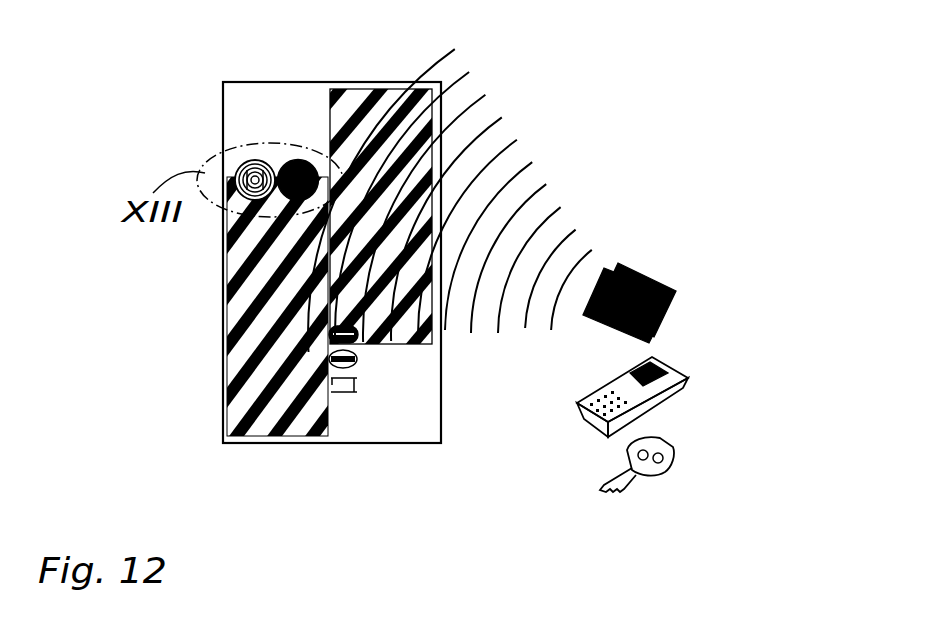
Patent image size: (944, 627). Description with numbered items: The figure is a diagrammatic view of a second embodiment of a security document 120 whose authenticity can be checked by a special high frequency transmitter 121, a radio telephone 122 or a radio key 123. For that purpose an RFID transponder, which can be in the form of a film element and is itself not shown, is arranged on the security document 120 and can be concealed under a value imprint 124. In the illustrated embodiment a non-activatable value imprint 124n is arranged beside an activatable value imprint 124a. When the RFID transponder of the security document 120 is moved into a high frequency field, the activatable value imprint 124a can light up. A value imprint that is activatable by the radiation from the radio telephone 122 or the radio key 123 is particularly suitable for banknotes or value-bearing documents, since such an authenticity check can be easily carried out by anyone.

The security document 120 is at (198, 108).
The special high frequency transmitter 121 is at (660, 293).
The radio telephone 122 is at (670, 368).
The radio key 123 is at (667, 437).
The value imprint 124 is at (277, 158).
The non-activatable value imprint 124n is at (257, 202).
The activatable value imprint 124a is at (303, 208).